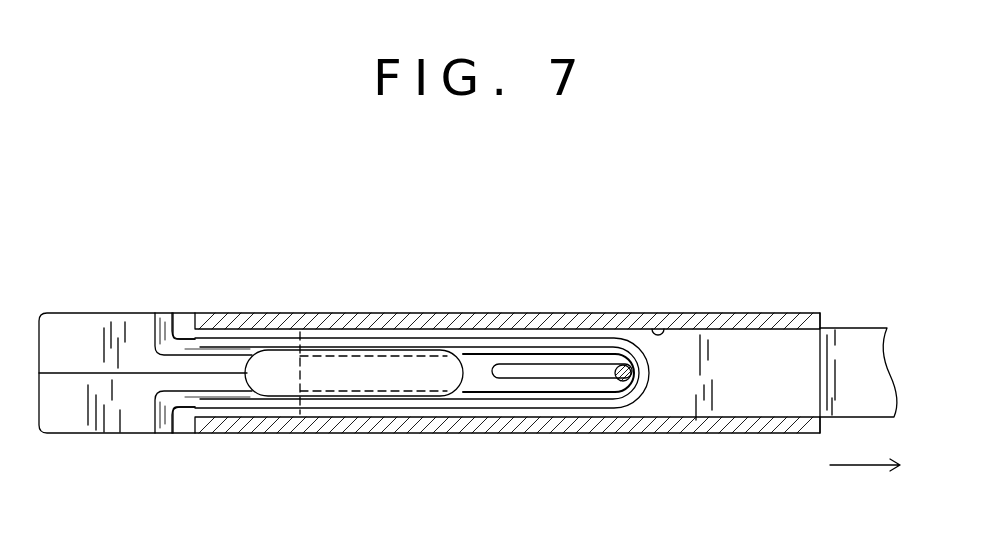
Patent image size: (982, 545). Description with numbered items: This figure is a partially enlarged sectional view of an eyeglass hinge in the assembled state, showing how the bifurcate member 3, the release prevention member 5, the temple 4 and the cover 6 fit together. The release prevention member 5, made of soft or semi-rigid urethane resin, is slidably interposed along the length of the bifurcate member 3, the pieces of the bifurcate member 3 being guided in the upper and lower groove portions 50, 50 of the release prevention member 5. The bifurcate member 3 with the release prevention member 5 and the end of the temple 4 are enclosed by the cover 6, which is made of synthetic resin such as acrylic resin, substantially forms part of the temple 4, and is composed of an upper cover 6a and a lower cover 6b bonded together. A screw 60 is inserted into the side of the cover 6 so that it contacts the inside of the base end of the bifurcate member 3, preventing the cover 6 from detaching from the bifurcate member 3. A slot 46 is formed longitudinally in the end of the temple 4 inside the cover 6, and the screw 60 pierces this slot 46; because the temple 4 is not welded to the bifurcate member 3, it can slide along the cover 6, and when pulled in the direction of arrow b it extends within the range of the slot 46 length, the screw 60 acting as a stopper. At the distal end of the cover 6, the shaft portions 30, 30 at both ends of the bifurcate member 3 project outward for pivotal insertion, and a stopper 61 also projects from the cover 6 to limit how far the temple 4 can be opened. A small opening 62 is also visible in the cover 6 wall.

The stopper 61 is at (72, 325).
The shaft portions 30 is at (156, 324).
The cover 6 is at (507, 360).
The upper cover 6a is at (312, 312).
The lower cover 6b is at (250, 436).
The hole in outer tube 62 is at (666, 328).
The bifurcate member 3 is at (473, 398).
The release prevention member 5 is at (398, 382).
The groove portions 50 is at (349, 356).
The slot 46 is at (545, 376).
The screw 60 is at (611, 380).
The temple 4 is at (866, 337).
The arrow b is at (855, 470).